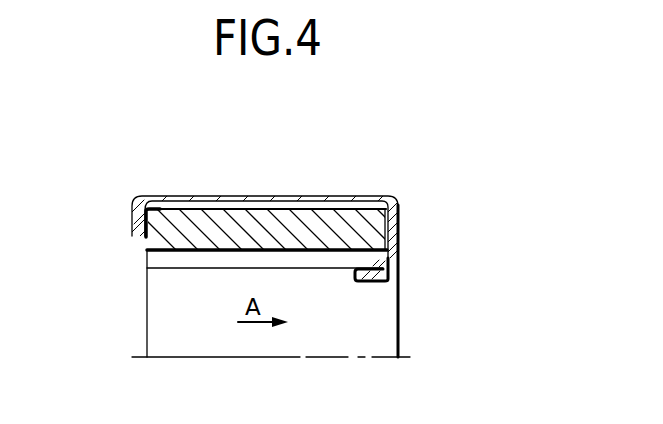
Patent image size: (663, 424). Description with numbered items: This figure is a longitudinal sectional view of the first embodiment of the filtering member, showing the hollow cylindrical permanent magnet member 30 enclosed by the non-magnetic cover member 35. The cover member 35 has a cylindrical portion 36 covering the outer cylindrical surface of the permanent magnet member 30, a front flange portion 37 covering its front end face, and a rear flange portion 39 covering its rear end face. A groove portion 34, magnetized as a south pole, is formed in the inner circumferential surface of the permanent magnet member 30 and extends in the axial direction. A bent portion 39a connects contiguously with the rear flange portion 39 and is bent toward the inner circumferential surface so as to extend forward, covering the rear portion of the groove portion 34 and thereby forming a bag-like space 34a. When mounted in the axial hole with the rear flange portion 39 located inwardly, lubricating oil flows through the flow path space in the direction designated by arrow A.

The permanent magnet member 30 is at (337, 223).
The groove portion 34 is at (198, 260).
The bag-like space 34a is at (377, 259).
The cover member 35 is at (274, 182).
The cylindrical portion 36 is at (193, 196).
The front flange portion 37 is at (133, 221).
The rear flange portion 39 is at (399, 230).
The bent portion 39a is at (372, 282).